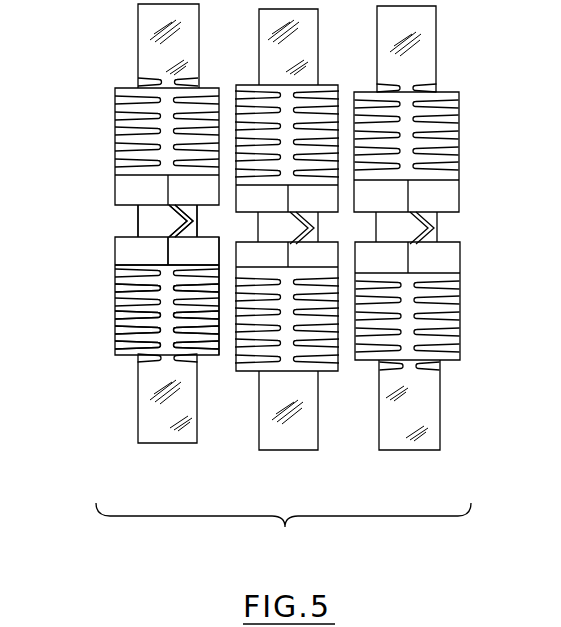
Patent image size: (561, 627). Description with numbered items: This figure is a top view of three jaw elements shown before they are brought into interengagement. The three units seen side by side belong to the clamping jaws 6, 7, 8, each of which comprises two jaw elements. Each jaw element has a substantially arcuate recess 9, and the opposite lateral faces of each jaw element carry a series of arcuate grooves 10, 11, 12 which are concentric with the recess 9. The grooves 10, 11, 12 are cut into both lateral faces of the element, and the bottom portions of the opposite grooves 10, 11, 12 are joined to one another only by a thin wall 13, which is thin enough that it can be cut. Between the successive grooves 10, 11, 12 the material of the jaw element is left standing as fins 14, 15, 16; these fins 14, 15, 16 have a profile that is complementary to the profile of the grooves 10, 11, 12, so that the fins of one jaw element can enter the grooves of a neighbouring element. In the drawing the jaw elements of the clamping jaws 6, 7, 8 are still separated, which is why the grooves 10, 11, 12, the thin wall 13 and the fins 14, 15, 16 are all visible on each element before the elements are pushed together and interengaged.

The clamping jaw 6 is at (128, 431).
The clamping jaw 7 is at (250, 426).
The clamping jaw 8 is at (373, 425).
The arcuate recess 9 is at (140, 221).
The arcuate groove 10 is at (218, 298).
The arcuate groove 11 is at (228, 300).
The arcuate groove 12 is at (213, 312).
The thin wall 13 is at (205, 288).
The fin 14 is at (217, 282).
The fin 15 is at (203, 308).
The fin 16 is at (205, 305).